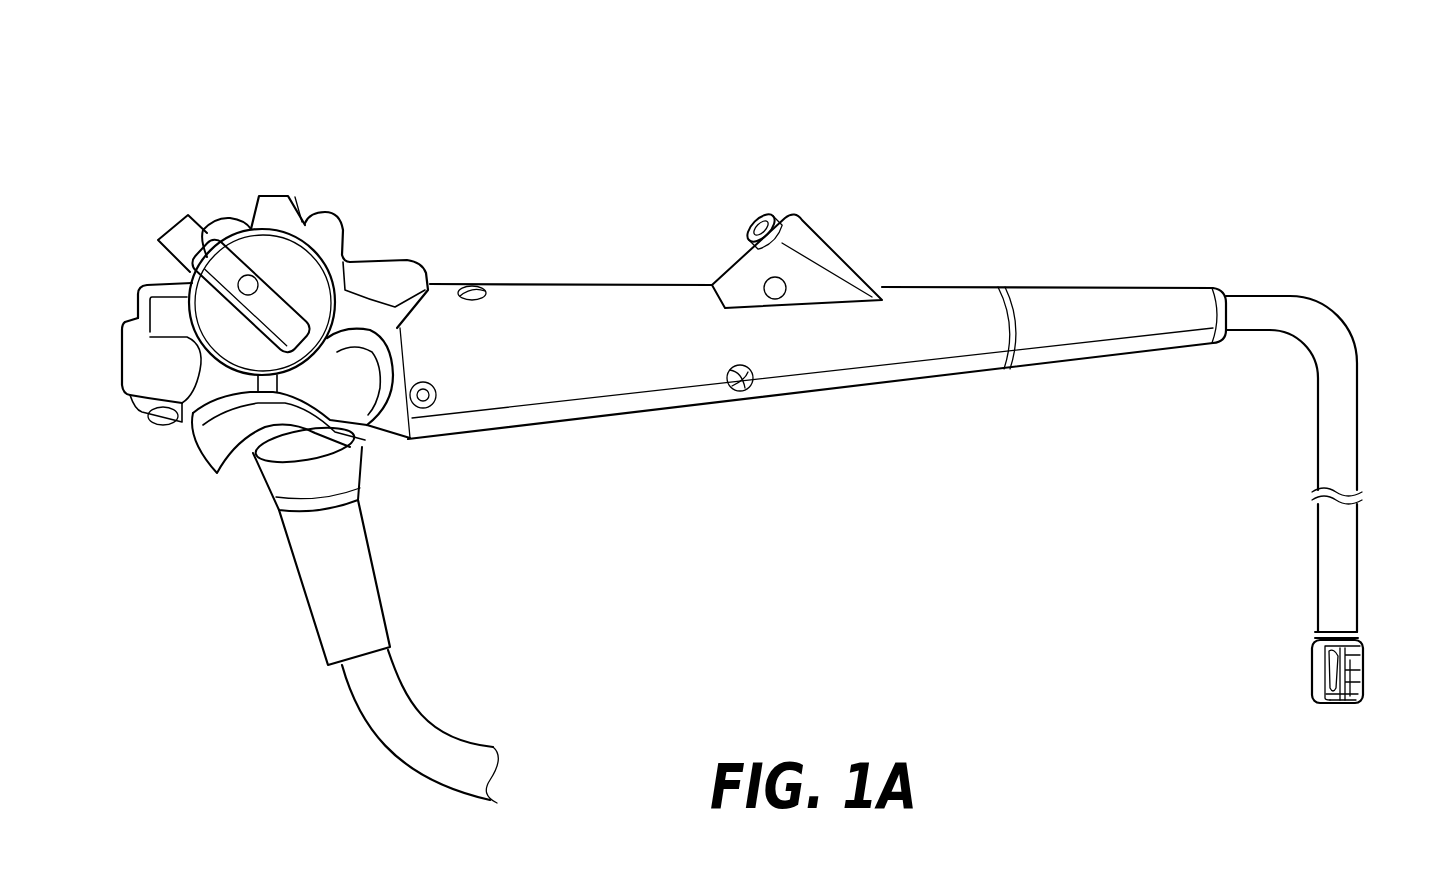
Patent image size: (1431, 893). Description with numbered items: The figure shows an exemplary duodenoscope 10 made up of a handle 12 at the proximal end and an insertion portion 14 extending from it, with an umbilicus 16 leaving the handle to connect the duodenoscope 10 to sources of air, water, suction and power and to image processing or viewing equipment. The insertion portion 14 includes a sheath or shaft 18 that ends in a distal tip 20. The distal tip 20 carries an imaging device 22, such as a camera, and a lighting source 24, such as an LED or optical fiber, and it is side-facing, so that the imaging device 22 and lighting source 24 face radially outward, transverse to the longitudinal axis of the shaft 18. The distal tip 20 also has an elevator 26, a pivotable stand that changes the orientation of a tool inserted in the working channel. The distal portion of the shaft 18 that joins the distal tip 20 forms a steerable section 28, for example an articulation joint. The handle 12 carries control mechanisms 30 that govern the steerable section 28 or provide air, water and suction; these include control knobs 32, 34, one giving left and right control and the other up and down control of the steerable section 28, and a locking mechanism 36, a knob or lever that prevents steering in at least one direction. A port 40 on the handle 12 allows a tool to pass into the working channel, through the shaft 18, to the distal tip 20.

The duodenoscope 10 is at (542, 210).
The handle 12 is at (663, 452).
The insertion portion 14 is at (1328, 496).
The umbilicus 16 is at (385, 748).
The shaft 18 is at (1277, 293).
The distal tip 20 is at (1310, 676).
The imaging device 22 is at (1360, 665).
The lighting source 24 is at (1355, 685).
The elevator 26 is at (1337, 701).
The steerable section 28 is at (1318, 580).
The control mechanisms 30 is at (258, 311).
The control knob 32 is at (337, 220).
The control knob 34 is at (273, 197).
The locking mechanism 36 is at (222, 250).
The port 40 is at (757, 215).